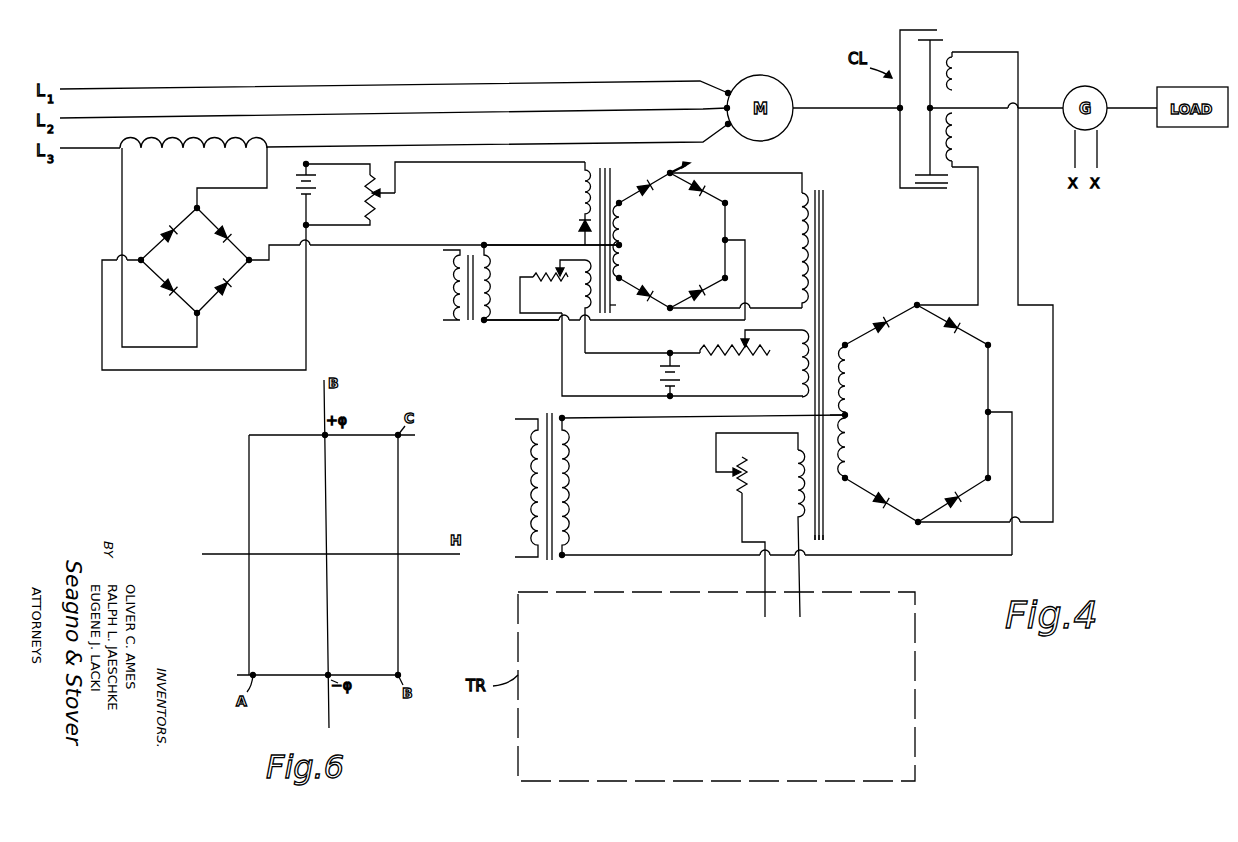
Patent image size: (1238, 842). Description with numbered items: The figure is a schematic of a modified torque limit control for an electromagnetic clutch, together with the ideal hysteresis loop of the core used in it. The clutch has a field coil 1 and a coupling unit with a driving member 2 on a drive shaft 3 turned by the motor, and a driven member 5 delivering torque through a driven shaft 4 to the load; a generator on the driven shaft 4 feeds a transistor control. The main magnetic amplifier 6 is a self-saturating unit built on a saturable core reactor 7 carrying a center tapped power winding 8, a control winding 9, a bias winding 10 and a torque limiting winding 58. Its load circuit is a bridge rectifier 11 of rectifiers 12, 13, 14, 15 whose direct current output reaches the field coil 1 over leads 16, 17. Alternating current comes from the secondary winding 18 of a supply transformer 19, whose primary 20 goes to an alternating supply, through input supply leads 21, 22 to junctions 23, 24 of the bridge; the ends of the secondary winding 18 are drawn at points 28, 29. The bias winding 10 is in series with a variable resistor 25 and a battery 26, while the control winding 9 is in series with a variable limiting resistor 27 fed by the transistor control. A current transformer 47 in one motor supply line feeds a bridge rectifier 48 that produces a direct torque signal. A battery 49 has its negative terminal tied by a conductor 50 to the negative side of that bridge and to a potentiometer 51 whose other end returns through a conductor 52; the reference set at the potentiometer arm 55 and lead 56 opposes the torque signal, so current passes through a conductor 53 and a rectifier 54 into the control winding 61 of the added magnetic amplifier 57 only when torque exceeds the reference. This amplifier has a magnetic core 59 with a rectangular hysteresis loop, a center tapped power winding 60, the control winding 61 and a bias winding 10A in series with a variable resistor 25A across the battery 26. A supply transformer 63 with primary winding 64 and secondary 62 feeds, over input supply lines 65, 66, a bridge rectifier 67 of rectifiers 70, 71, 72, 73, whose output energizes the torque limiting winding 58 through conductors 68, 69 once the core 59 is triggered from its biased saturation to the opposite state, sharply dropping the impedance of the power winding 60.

The field coil 1 is at (958, 80).
The driving member 2 is at (933, 190).
The drive shaft 3 is at (838, 108).
The driven shaft 4 is at (1033, 106).
The driven member 5 is at (940, 42).
The magnetic amplifier 6 is at (831, 195).
The saturable core reactor 7 is at (828, 535).
The center tapped power winding 8 is at (850, 372).
The control winding 9 is at (793, 492).
The bias winding 10 is at (797, 378).
The bias winding 10A is at (581, 295).
The bridge rectifier 11 is at (925, 429).
The rectifier 12 is at (884, 329).
The rectifier 13 is at (956, 329).
The rectifier 14 is at (890, 503).
The rectifier 15 is at (953, 503).
The lead 16 is at (975, 250).
The lead 17 is at (1022, 250).
The secondary winding 18 is at (571, 488).
The supply transformer 19 is at (541, 411).
The primary 20 is at (530, 475).
The input supply lead 21 is at (643, 417).
The input supply lead 22 is at (684, 557).
The junction 23 is at (848, 415).
The junction 24 is at (985, 418).
The variable resistor 25 is at (748, 357).
The variable resistor 25A is at (552, 283).
The battery 26 is at (660, 368).
The variable limiting resistor 27 is at (749, 476).
The junction 28 is at (560, 414).
The junction 29 is at (565, 557).
The current transformer 47 is at (178, 150).
The bridge rectifier 48 is at (198, 231).
The battery 49 is at (296, 184).
The conductor 50 is at (199, 370).
The potentiometer 51 is at (366, 204).
The conductor 52 is at (359, 164).
The conductor 53 is at (444, 245).
The rectifier 54 is at (578, 227).
The potentiometer arm 55 is at (397, 194).
The lead 56 is at (333, 226).
The magnetic amplifier 57 is at (613, 192).
The torque limiting winding 58 is at (795, 250).
The magnetic core 59 is at (623, 305).
The center tapped power winding 60 is at (623, 229).
The control winding 61 is at (576, 184).
The secondary 62 is at (490, 299).
The supply transformer 63 is at (472, 323).
The primary winding 64 is at (452, 292).
The input supply line 65 is at (520, 247).
The input supply line 66 is at (528, 323).
The bridge rectifier 67 is at (669, 243).
The conductor 68 is at (776, 177).
The conductor 69 is at (778, 306).
The rectifier 70 is at (650, 196).
The rectifier 71 is at (700, 289).
The rectifier 72 is at (700, 196).
The rectifier 73 is at (651, 296).